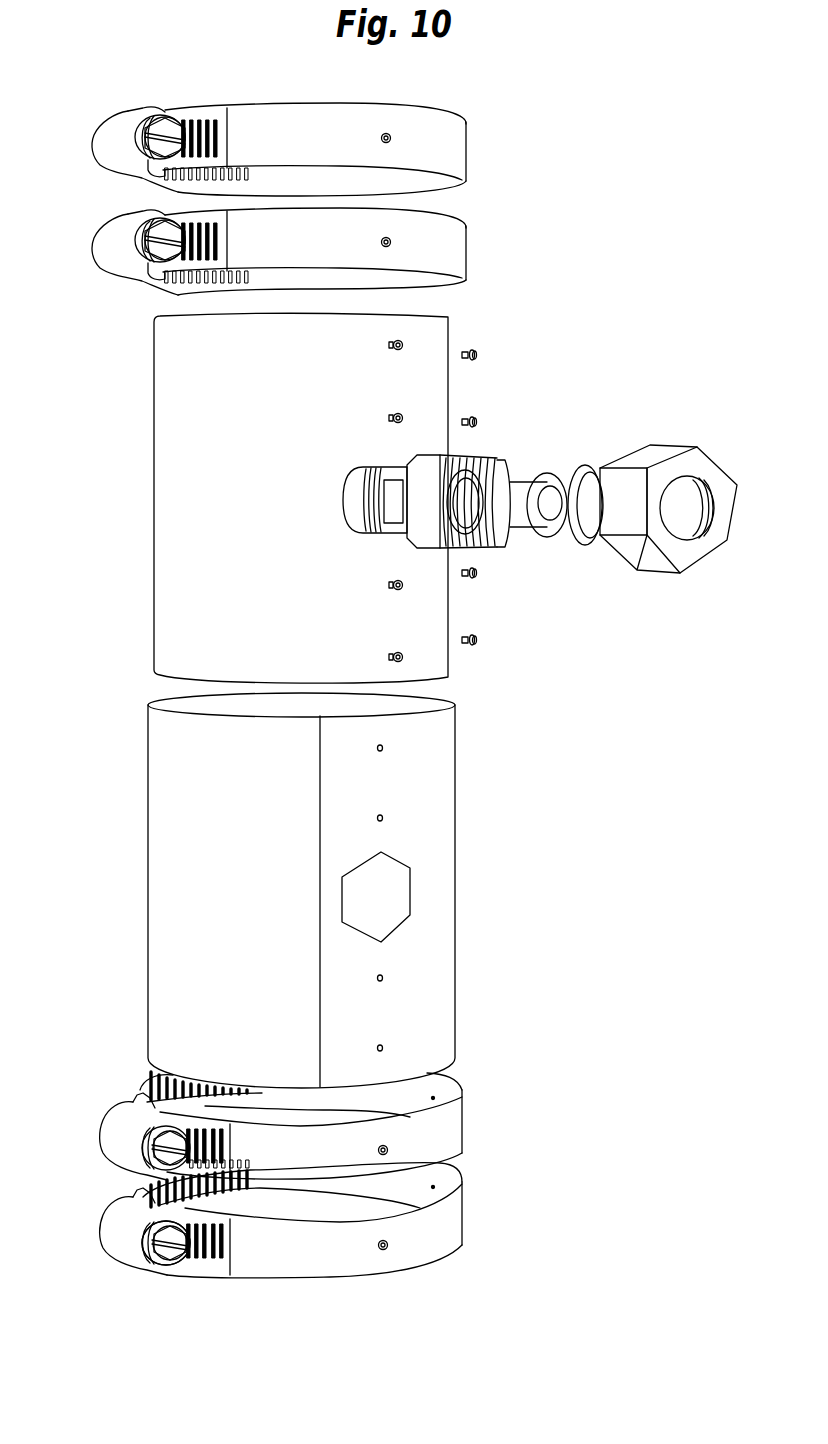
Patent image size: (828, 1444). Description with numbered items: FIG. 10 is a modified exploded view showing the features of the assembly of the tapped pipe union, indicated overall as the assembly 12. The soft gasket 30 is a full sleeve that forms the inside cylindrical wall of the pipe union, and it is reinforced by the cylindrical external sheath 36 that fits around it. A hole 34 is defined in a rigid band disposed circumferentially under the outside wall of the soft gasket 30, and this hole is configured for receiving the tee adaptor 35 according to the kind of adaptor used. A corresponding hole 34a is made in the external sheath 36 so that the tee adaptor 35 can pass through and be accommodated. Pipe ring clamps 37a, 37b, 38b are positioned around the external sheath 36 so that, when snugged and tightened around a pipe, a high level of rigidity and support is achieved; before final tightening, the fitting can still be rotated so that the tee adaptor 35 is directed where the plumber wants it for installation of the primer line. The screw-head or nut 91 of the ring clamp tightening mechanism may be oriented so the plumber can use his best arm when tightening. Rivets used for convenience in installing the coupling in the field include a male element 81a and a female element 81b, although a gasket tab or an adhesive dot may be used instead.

The heater assembly 12 is at (692, 897).
The soft gasket 30 is at (187, 530).
The hole 34 is at (350, 475).
The corresponding hole 34a is at (410, 887).
The tee adaptor 35 is at (603, 593).
The external sheath 36 is at (163, 878).
The pipe ring clamp 37a is at (453, 147).
The pipe ring clamp 37b is at (453, 244).
The pipe ring clamp 38b is at (447, 1127).
The male element 81a is at (482, 648).
The female element 81b is at (405, 636).
The screw-head or nut 91 is at (168, 1278).